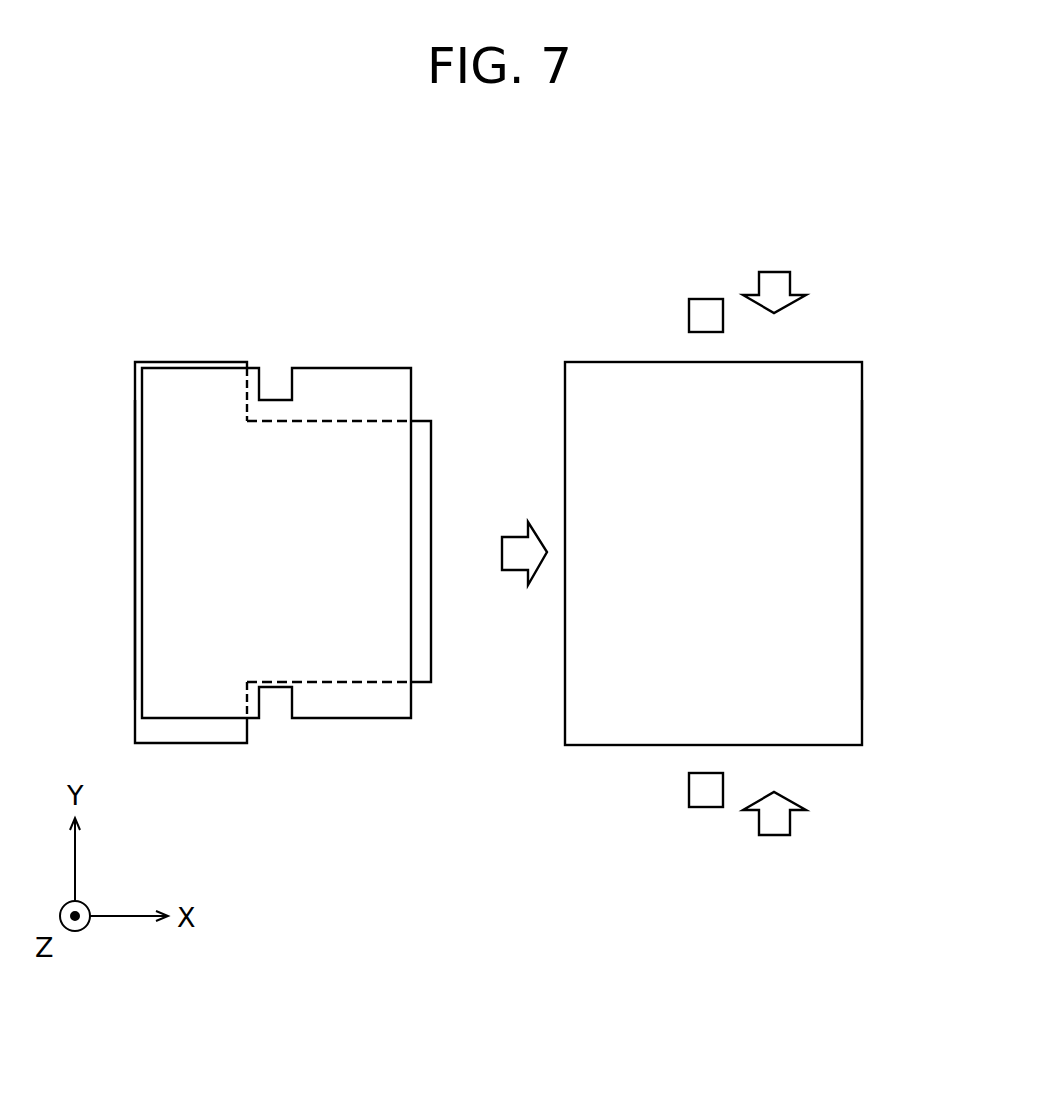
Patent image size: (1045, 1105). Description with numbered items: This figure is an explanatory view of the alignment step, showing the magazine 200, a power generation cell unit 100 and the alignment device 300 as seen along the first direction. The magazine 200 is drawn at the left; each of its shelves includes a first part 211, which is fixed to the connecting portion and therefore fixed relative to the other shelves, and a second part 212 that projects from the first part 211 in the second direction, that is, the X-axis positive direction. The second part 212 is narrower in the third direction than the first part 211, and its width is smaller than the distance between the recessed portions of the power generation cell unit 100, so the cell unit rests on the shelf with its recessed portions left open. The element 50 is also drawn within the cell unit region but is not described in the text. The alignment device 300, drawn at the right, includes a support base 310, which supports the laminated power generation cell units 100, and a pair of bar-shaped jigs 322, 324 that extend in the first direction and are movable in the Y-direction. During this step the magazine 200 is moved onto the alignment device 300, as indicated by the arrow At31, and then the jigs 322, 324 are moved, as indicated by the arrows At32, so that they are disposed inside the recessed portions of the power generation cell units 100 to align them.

The semiconductor element 50 is at (362, 703).
The power generation cell unit 100 is at (414, 397).
The magazine 200 is at (203, 748).
The first part 211 is at (136, 677).
The second part 212 is at (430, 456).
The alignment device 300 is at (604, 340).
The support base 310 is at (864, 590).
The jig 322 is at (705, 299).
The jig 324 is at (702, 807).
The arrow At31 is at (516, 573).
The arrow At32 is at (792, 287).